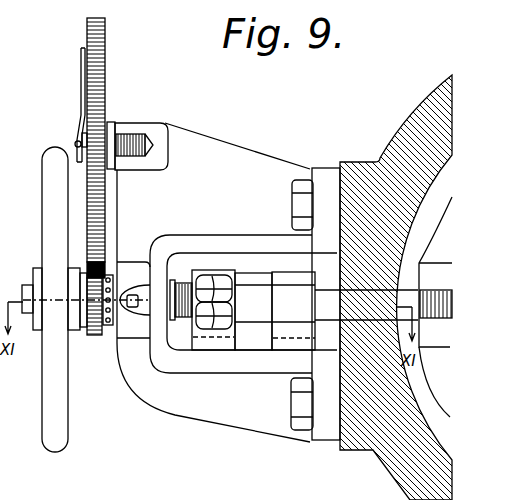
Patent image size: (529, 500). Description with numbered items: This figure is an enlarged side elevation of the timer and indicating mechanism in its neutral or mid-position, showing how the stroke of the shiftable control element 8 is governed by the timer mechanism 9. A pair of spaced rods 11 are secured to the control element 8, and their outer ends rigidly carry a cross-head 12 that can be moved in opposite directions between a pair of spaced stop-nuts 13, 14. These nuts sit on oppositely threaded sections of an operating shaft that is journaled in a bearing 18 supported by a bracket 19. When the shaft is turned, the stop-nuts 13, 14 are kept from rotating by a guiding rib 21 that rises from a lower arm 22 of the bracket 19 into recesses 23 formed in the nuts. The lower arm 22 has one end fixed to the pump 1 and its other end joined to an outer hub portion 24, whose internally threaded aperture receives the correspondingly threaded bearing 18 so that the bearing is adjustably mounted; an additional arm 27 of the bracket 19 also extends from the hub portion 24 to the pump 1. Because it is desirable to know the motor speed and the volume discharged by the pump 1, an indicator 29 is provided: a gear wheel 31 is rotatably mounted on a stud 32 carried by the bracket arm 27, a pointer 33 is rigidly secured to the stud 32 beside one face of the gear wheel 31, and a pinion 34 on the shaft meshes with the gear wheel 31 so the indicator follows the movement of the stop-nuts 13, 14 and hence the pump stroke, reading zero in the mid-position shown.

The pump 1 is at (395, 141).
The shiftable control element 8 is at (443, 372).
The timer mechanism 9 is at (299, 304).
The spaced rods 11 is at (345, 303).
The cross-head 12 is at (253, 328).
The stop-nut 13 is at (210, 272).
The stop-nut 14 is at (290, 272).
The bearing 18 is at (108, 265).
The bracket 19 is at (198, 215).
The guiding rib 21 is at (183, 337).
The lower arm 22 is at (213, 411).
The recesses 23 is at (211, 333).
The outer hub portion 24 is at (130, 341).
The additional arm 27 is at (195, 122).
The indicator 29 is at (81, 50).
The gear wheel 31 is at (105, 88).
The stud 32 is at (115, 122).
The pointer 33 is at (81, 88).
The pinion 34 is at (91, 331).